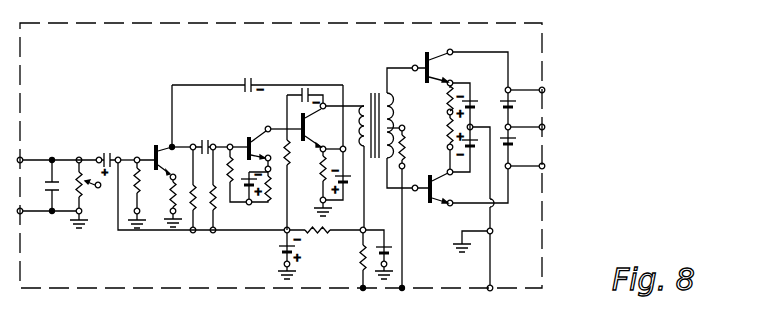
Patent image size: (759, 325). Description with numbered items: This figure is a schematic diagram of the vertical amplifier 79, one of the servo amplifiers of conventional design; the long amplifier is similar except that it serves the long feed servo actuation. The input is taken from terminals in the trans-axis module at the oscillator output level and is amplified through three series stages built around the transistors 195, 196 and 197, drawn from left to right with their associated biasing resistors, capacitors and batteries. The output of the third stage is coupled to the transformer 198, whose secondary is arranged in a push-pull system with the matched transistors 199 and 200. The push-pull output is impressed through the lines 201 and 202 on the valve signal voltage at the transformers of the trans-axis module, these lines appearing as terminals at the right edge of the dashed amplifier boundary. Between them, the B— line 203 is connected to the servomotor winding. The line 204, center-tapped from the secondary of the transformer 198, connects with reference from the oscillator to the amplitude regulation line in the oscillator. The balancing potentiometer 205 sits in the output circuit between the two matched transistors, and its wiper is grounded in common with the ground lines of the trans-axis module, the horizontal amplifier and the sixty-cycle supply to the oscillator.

The vertical amplifier 79 is at (410, 22).
The transistor 195 is at (153, 150).
The transistor 196 is at (247, 138).
The transistor 197 is at (297, 122).
The transformer 198 is at (369, 92).
The matched transistor 199 is at (431, 56).
The matched transistor 200 is at (432, 204).
The output line 201 is at (527, 91).
The output line 202 is at (527, 167).
The B— line 203 is at (527, 128).
The center-tap line 204 is at (404, 252).
The balancing potentiometer 205 is at (447, 128).